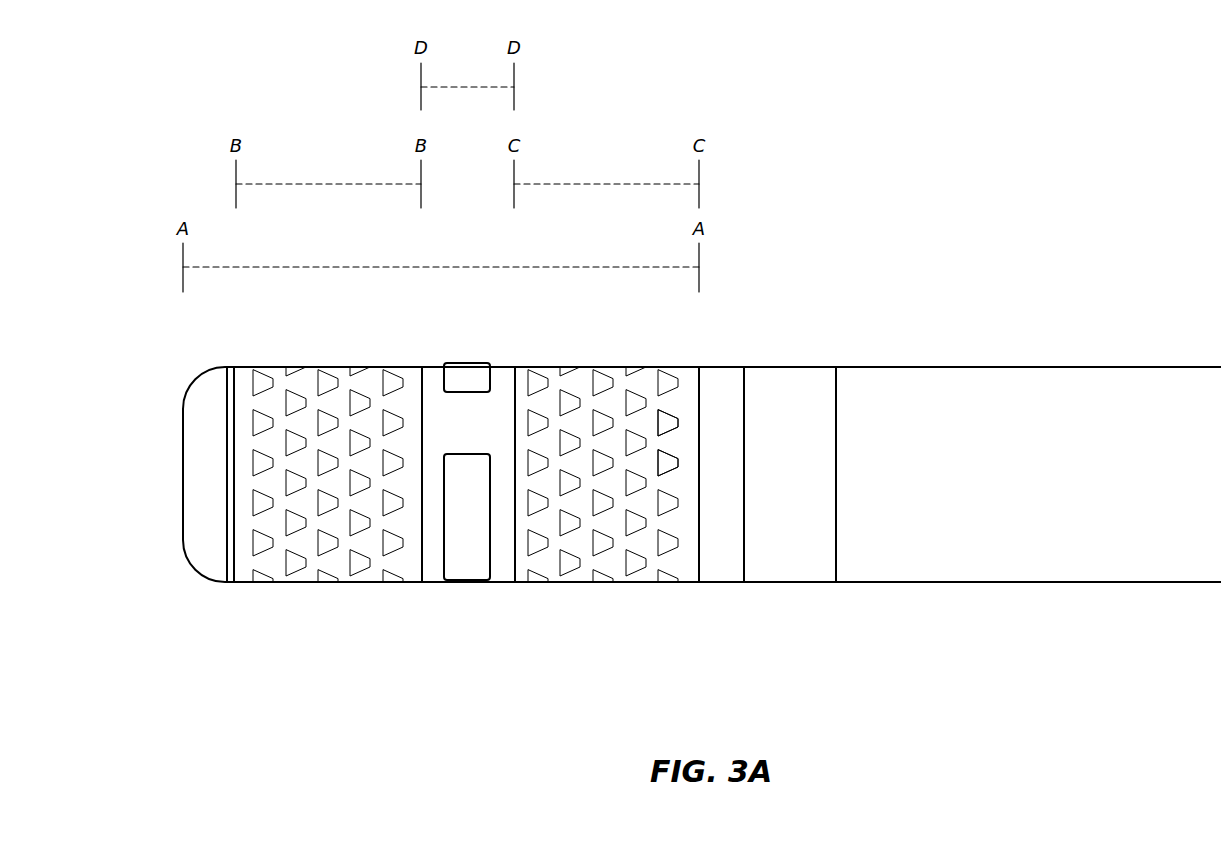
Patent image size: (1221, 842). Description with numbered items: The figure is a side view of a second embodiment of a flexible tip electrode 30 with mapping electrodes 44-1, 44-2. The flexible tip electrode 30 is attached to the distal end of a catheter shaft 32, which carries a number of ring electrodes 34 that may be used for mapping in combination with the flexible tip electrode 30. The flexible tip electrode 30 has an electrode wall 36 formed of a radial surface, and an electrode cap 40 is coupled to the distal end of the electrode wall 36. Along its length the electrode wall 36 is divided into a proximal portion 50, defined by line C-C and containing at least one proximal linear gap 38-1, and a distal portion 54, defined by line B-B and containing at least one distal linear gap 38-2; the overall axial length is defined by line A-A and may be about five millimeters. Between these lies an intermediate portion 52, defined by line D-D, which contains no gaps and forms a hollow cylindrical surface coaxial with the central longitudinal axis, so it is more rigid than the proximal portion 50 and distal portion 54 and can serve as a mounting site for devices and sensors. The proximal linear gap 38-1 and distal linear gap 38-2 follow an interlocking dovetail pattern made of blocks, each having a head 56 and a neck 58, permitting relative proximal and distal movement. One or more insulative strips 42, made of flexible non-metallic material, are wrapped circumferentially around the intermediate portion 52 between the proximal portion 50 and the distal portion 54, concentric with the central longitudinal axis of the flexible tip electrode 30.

The flexible tip electrode 30 is at (179, 331).
The catheter shaft 32 is at (1007, 562).
The ring electrodes 34 is at (793, 562).
The electrode wall 36 is at (688, 553).
The proximal linear gap 38-1 is at (658, 520).
The distal linear gap 38-2 is at (277, 553).
The electrode cap 40 is at (210, 553).
The insulative strip 42 is at (503, 562).
The mapping electrode 44-1 is at (472, 560).
The mapping electrode 44-2 is at (463, 378).
The proximal portion 50 is at (514, 343).
The intermediate portion 52 is at (514, 343).
The distal portion 54 is at (421, 343).
The head 56 is at (677, 443).
The neck 58 is at (668, 443).